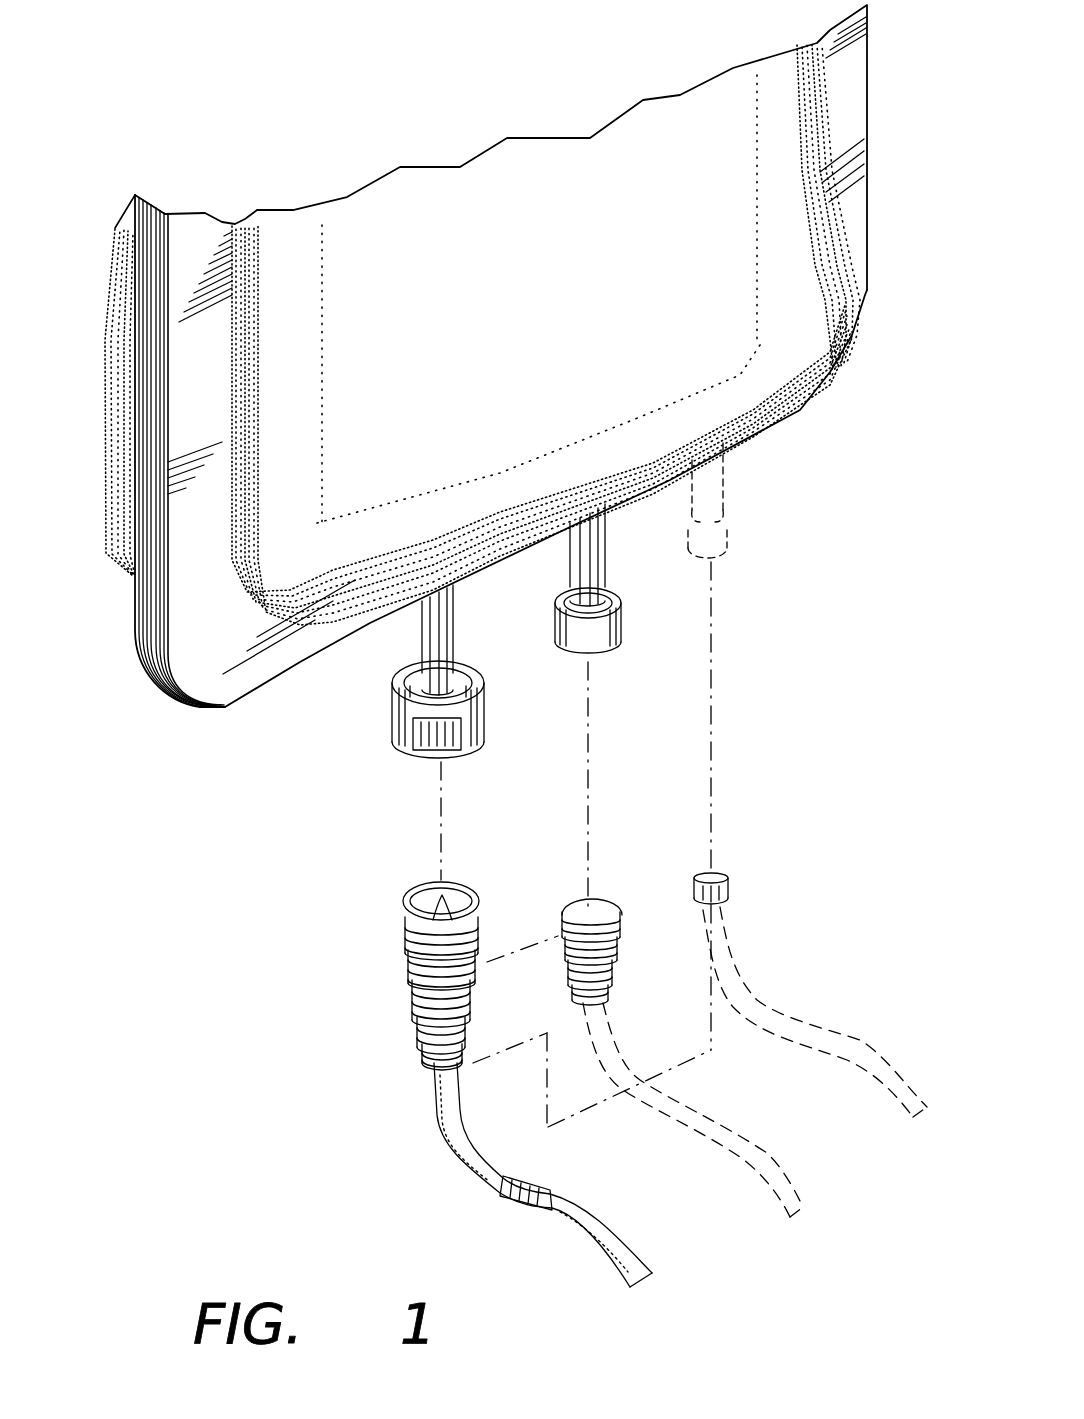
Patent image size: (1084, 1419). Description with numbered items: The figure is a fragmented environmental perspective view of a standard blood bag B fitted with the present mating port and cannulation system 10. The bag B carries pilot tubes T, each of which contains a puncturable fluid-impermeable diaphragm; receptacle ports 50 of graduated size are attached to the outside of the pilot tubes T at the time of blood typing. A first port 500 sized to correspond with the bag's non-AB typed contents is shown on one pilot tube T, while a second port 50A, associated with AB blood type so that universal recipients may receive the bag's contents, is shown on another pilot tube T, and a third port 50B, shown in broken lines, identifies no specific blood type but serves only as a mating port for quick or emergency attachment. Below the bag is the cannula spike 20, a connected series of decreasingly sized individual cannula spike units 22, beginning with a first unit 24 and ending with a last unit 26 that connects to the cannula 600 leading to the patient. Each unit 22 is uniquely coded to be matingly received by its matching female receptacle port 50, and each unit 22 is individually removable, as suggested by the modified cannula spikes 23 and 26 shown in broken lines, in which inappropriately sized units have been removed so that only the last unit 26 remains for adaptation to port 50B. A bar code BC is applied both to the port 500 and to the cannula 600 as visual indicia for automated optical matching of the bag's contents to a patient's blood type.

The blood bag B is at (526, 309).
The pilot tube T is at (455, 628).
The mating port and cannulation system 10 is at (403, 770).
The cannula spike 20 is at (424, 976).
The cannula spike units 22 is at (477, 1021).
The cannula spike (modified, broken lines) 23 is at (612, 966).
The first unit 24 is at (400, 922).
The last unit 26 is at (420, 1050).
The receptacle ports 50 is at (544, 645).
The second port 50A is at (610, 650).
The third port 50B is at (727, 551).
The first port 500 is at (478, 750).
The cannula 600 is at (497, 1174).
The bar code BC is at (415, 738).